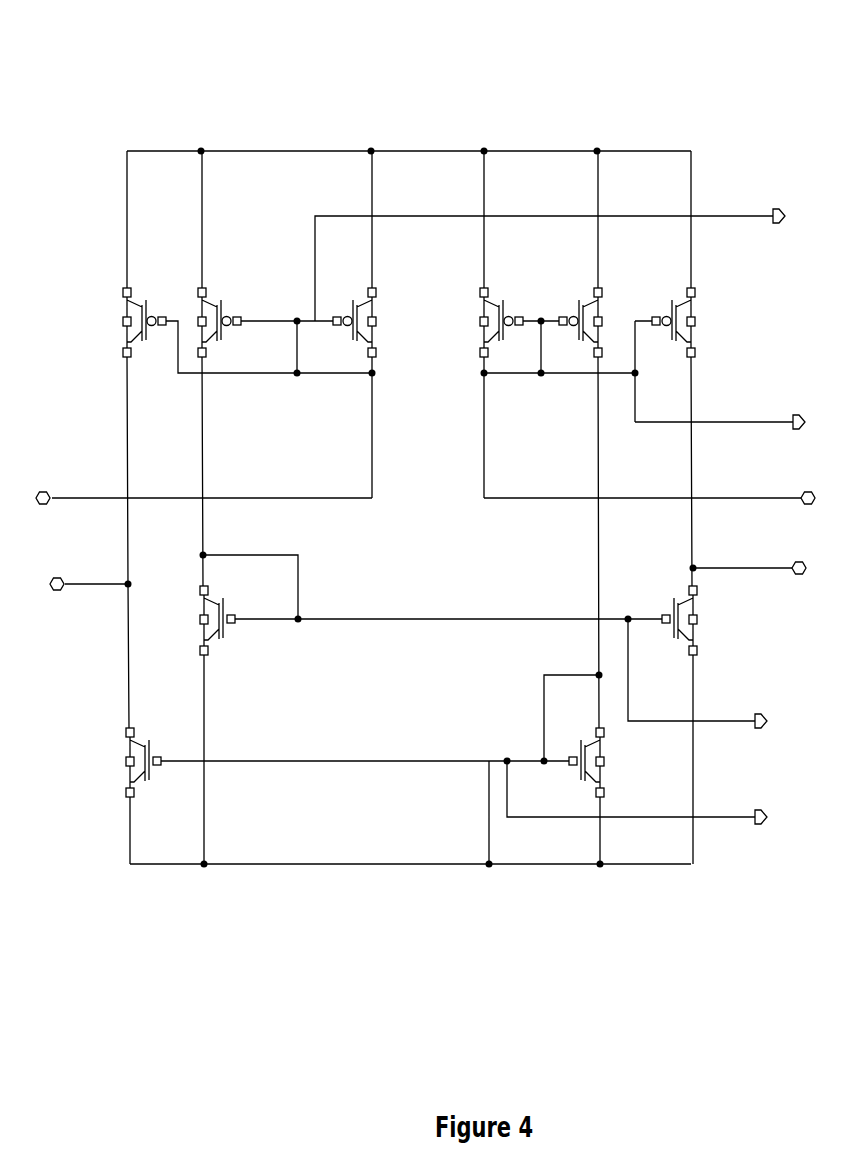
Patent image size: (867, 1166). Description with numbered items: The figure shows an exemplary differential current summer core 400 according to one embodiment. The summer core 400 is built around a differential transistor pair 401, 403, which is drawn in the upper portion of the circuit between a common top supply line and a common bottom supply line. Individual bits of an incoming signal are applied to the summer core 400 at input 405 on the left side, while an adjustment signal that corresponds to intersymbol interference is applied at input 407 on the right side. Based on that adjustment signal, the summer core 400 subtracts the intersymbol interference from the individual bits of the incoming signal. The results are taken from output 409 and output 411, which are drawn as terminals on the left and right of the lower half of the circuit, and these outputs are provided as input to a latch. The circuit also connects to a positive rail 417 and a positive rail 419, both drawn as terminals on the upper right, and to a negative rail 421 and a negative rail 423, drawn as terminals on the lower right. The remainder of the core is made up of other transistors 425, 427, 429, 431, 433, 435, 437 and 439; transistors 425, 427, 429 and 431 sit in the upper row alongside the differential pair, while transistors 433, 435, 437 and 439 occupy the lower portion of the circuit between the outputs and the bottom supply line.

The differential current summer core 400 is at (717, 39).
The differential transistor pair transistor 401 is at (383, 320).
The differential transistor pair transistor 403 is at (473, 337).
The input 405 is at (40, 492).
The input 407 is at (815, 492).
The output 409 is at (50, 598).
The output 411 is at (808, 582).
The positive rail 417 is at (788, 207).
The positive rail 419 is at (785, 410).
The negative rail 421 is at (772, 721).
The negative rail 423 is at (772, 818).
The transistor 425 is at (115, 300).
The transistor 427 is at (230, 303).
The transistor 429 is at (569, 297).
The transistor 431 is at (670, 300).
The transistor 433 is at (229, 645).
The transistor 435 is at (704, 625).
The transistor 437 is at (115, 761).
The transistor 439 is at (606, 768).